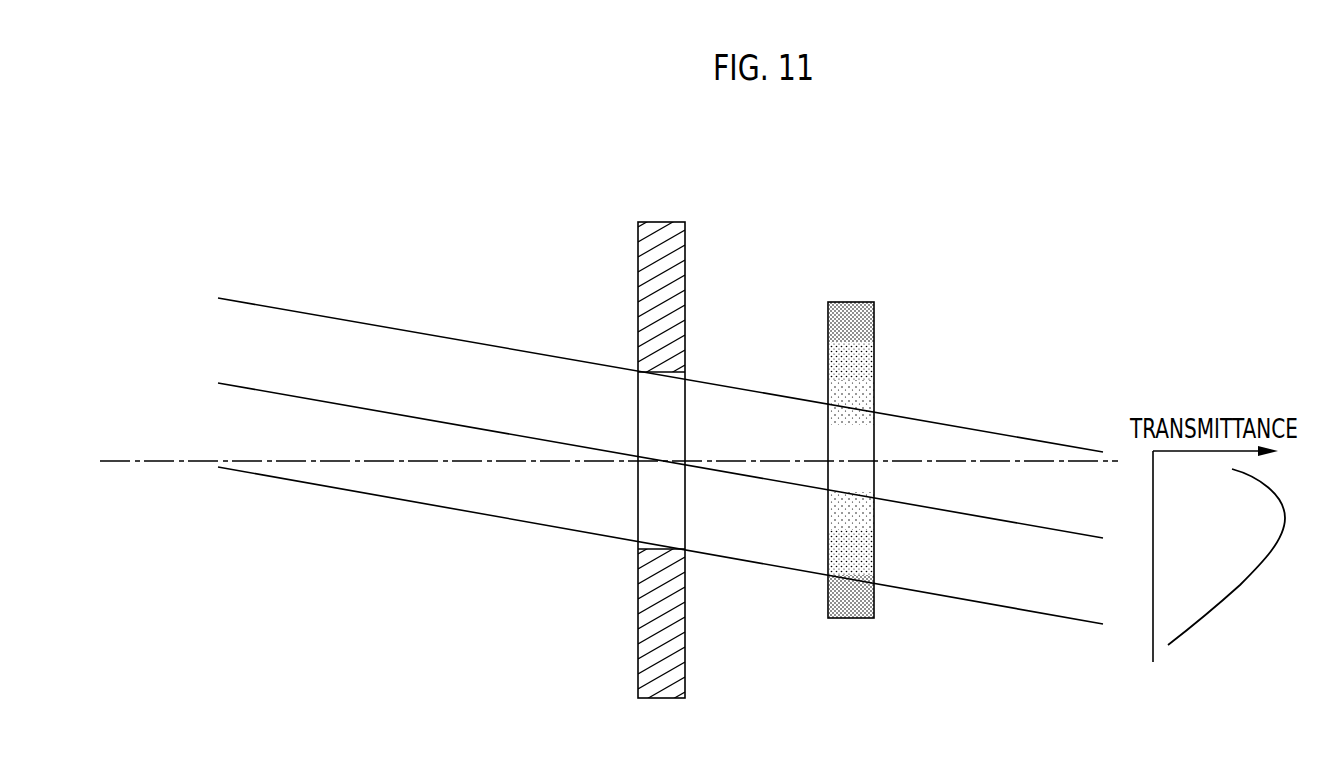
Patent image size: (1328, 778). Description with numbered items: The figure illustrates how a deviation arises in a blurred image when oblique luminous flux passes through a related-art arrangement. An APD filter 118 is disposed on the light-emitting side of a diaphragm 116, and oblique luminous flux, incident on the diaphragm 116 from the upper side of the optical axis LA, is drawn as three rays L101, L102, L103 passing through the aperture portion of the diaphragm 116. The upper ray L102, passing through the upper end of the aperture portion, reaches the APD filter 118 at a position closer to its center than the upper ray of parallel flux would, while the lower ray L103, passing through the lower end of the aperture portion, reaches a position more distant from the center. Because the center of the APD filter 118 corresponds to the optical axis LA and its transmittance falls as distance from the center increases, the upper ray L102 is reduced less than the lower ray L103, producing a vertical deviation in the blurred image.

The diaphragm 116 is at (660, 222).
The APD filter 118 is at (852, 302).
The ray L101 is at (267, 391).
The upper ray L102 is at (267, 306).
The lower ray L103 is at (333, 488).
The optical axis LA is at (153, 461).